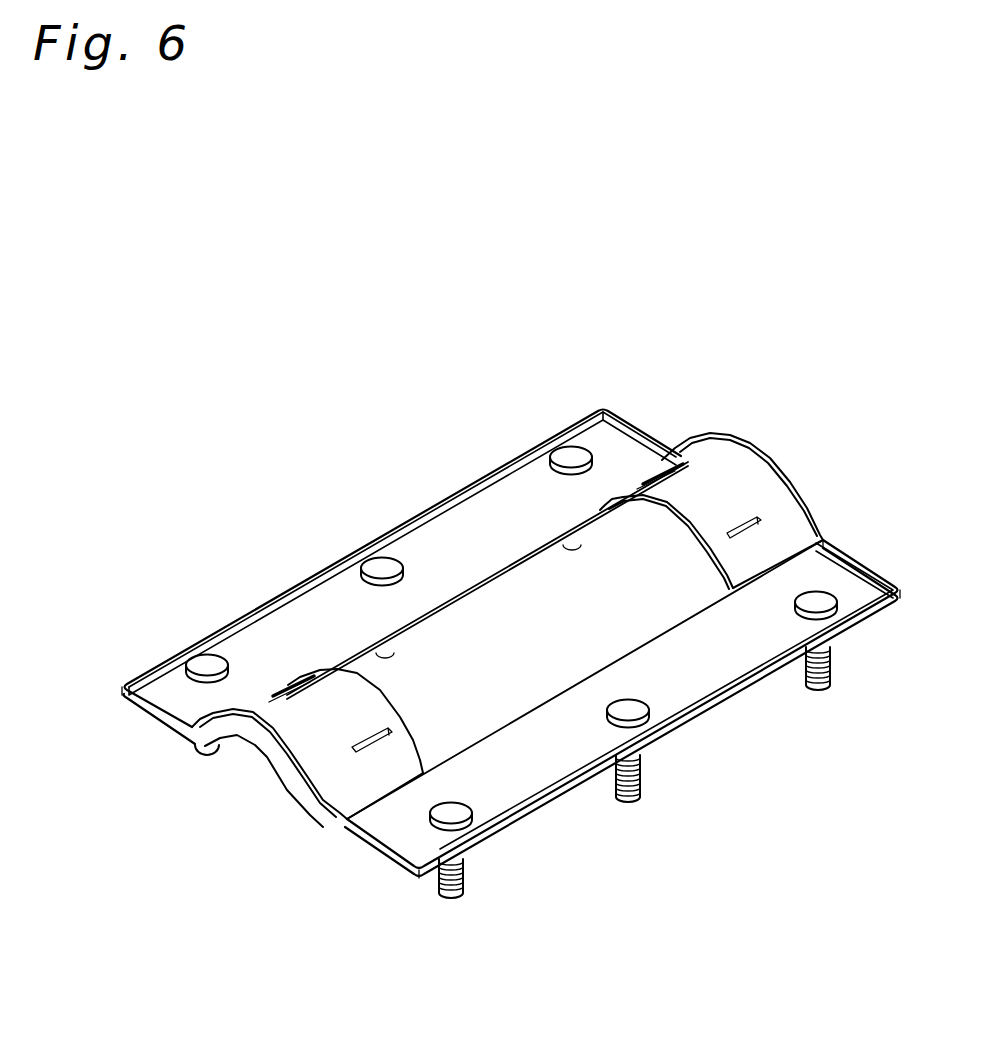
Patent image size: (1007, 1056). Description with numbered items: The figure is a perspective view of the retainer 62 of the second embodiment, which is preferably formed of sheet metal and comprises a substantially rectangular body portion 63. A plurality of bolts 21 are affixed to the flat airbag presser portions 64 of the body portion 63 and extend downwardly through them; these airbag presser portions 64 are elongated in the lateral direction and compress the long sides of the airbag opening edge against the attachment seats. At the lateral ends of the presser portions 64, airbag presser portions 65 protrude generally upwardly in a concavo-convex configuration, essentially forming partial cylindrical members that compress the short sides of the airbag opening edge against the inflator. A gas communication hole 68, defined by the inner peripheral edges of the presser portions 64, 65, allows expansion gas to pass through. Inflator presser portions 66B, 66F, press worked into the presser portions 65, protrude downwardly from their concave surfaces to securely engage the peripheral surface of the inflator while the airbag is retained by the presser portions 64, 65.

The bolts 21 is at (571, 447).
The retainer 62 is at (525, 947).
The body portion 63 is at (522, 777).
The airbag presser portions 64 is at (435, 537).
The airbag presser portions 65 is at (720, 477).
The inflator presser portion 66F is at (647, 477).
The inflator presser portion 66B is at (752, 533).
The gas communication hole 68 is at (526, 590).